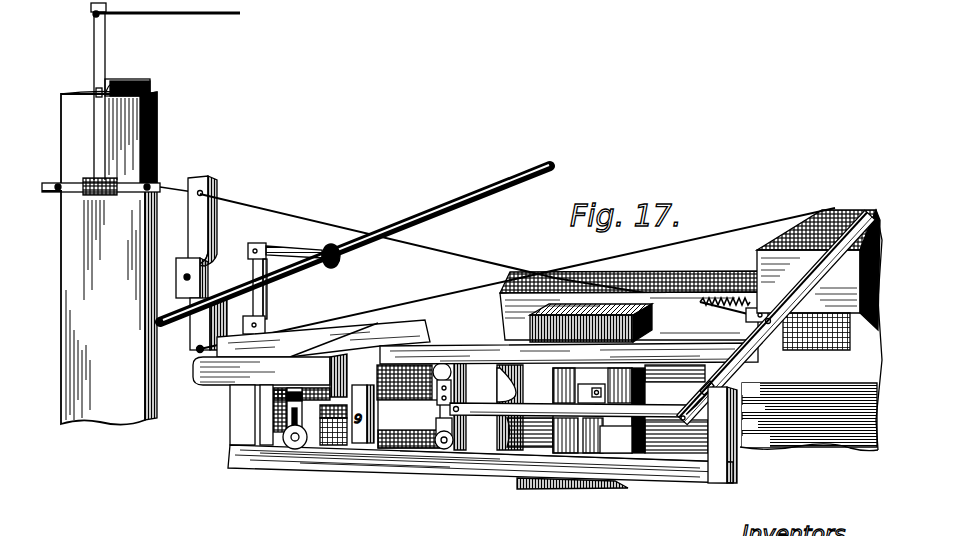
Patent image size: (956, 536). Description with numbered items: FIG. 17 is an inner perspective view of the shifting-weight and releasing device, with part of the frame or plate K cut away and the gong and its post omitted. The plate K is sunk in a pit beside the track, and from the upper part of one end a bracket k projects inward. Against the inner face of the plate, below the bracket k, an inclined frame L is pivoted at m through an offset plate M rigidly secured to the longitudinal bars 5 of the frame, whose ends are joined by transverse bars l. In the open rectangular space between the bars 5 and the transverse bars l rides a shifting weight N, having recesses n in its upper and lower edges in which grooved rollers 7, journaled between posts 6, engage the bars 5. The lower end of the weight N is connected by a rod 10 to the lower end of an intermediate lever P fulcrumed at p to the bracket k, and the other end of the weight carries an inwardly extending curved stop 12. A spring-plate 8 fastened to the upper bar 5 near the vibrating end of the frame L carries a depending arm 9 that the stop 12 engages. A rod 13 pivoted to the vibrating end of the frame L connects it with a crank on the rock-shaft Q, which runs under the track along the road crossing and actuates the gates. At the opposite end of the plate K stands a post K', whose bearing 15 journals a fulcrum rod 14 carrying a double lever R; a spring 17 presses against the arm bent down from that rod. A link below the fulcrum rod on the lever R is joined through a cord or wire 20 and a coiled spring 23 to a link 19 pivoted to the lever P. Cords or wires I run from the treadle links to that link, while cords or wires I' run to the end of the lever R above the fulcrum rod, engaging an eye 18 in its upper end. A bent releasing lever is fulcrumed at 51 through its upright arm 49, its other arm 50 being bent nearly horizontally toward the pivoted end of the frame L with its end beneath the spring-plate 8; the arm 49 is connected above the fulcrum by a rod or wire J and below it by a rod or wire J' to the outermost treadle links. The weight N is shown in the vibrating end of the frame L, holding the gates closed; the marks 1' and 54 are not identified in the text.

The eye 18 is at (93, 14).
The double lever R is at (92, 40).
The cords or wires I' is at (167, 24).
The fulcrum rod 14 is at (130, 80).
The bearing 15 is at (111, 84).
The cords or wires I is at (101, 178).
The bracket link 1' is at (136, 176).
The rod or wire J is at (52, 203).
The post K' is at (109, 258).
The upright arm 49 is at (202, 221).
The fulcrum 51 is at (190, 277).
The cord or wire 20 is at (450, 248).
The rod or wire J' is at (516, 280).
The rock-shaft Q is at (407, 228).
The arm 9 is at (296, 250).
The rod 13 is at (258, 295).
The spring-plate 8 is at (326, 352).
The arm 50 is at (261, 371).
The block side 54 is at (347, 375).
The transverse bars l is at (480, 437).
The curved stop 12 is at (302, 425).
The posts 6 is at (302, 437).
The shifting weight N is at (408, 406).
The recesses n is at (437, 385).
The grooved rollers 7 is at (437, 410).
The spring 17 is at (683, 418).
The offset plate M is at (630, 410).
The rod 10 is at (572, 412).
The pivot m is at (602, 392).
The longitudinal bars 5 is at (569, 354).
The frame or plate K is at (630, 306).
The coiled spring 23 is at (734, 317).
The intermediate lever P is at (798, 286).
The fulcrum p is at (805, 281).
The bracket k is at (811, 330).
The link 19 is at (772, 326).
The inclined frame L is at (722, 435).